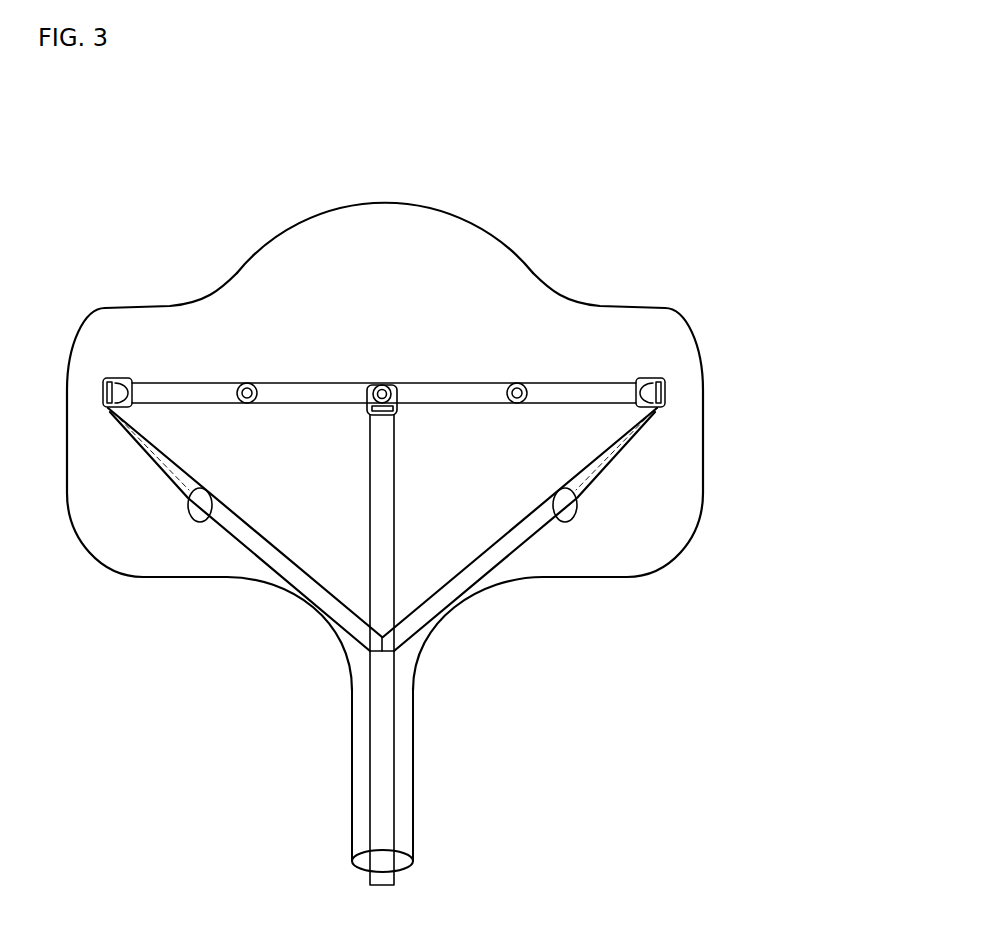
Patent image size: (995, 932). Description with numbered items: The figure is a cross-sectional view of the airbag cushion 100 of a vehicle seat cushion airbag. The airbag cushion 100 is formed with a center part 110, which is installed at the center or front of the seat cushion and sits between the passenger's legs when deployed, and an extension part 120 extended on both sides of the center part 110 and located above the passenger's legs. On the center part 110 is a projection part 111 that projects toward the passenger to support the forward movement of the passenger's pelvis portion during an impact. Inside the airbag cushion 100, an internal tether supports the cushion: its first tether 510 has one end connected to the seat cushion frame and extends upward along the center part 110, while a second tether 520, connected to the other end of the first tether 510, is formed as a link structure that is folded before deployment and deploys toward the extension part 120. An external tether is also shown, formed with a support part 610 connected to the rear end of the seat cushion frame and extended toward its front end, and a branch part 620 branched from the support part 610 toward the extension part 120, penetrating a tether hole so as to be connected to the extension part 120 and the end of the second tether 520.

The airbag cushion 100 is at (715, 364).
The center part 110 is at (407, 662).
The projection part 111 is at (386, 225).
The extension part 120 is at (148, 327).
The first tether 510 is at (385, 568).
The second tether 520 is at (470, 392).
The support part 610 is at (385, 818).
The branch part 620 is at (347, 617).